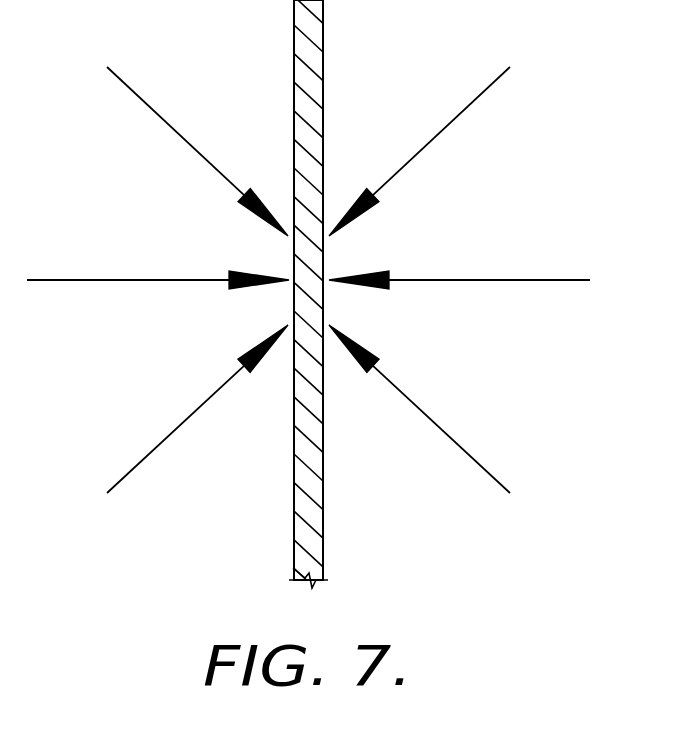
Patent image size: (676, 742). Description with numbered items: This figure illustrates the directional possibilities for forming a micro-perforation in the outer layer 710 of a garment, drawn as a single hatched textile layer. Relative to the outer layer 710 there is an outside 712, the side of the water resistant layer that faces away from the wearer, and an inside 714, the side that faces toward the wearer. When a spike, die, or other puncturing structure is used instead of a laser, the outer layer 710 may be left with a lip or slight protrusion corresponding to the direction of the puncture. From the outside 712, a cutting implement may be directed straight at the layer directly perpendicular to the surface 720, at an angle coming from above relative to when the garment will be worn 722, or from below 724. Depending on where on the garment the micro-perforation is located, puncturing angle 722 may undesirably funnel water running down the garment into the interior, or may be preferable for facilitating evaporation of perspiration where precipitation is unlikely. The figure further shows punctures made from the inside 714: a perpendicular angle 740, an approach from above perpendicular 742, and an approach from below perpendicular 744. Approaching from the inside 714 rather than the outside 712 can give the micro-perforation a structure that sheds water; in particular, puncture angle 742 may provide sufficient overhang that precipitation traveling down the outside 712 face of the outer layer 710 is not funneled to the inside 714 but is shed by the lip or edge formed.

The outer layer 710 is at (326, 543).
The outside 712 is at (237, 493).
The inside 714 is at (426, 495).
The perpendicular puncture direction from the outside 720 is at (115, 279).
The puncturing angle from above the outside 722 is at (147, 103).
The puncturing angle from below the outside 724 is at (140, 462).
The perpendicular angle from the inside 740 is at (507, 278).
The micro-perforation angle from above perpendicular from the inside 742 is at (472, 100).
The approach from below perpendicular from the inside 744 is at (455, 440).